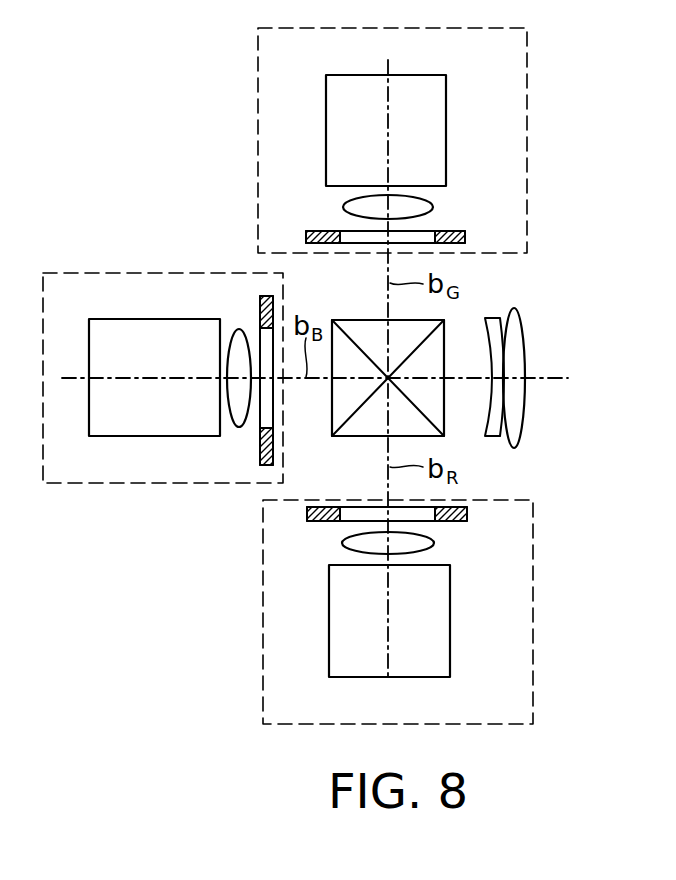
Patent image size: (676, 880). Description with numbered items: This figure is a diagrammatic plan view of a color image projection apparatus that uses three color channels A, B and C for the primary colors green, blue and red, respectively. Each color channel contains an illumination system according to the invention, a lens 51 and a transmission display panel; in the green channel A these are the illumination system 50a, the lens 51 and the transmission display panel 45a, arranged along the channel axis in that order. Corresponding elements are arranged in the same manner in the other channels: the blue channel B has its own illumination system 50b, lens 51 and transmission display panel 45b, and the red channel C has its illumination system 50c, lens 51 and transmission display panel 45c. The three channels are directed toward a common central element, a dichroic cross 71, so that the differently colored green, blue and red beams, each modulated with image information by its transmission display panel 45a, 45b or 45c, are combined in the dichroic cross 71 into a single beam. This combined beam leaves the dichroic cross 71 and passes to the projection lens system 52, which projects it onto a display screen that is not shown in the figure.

The green color channel A is at (541, 151).
The blue color channel B is at (109, 259).
The red color channel C is at (548, 638).
The illumination system 50a is at (326, 98).
The illumination system 50b is at (153, 437).
The illumination system 50c is at (329, 653).
The lens 51 is at (345, 208).
The transmission display panel 45a is at (450, 231).
The transmission display panel 45b is at (258, 318).
The transmission display panel 45c is at (448, 521).
The dichroic cross 71 is at (388, 378).
The projection lens system 52 is at (518, 422).